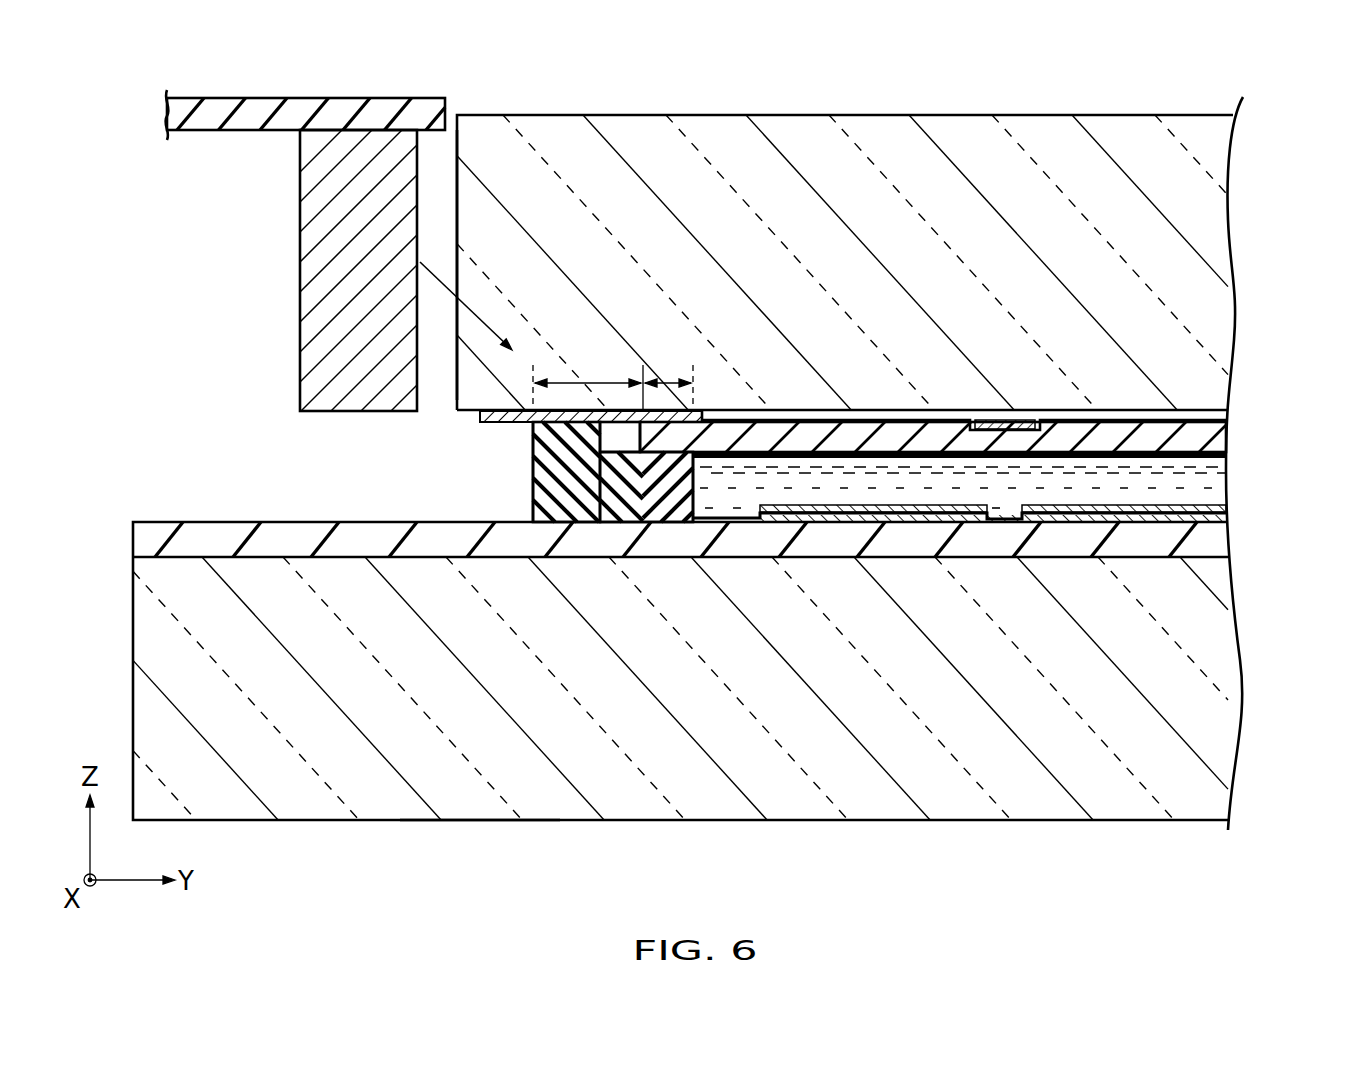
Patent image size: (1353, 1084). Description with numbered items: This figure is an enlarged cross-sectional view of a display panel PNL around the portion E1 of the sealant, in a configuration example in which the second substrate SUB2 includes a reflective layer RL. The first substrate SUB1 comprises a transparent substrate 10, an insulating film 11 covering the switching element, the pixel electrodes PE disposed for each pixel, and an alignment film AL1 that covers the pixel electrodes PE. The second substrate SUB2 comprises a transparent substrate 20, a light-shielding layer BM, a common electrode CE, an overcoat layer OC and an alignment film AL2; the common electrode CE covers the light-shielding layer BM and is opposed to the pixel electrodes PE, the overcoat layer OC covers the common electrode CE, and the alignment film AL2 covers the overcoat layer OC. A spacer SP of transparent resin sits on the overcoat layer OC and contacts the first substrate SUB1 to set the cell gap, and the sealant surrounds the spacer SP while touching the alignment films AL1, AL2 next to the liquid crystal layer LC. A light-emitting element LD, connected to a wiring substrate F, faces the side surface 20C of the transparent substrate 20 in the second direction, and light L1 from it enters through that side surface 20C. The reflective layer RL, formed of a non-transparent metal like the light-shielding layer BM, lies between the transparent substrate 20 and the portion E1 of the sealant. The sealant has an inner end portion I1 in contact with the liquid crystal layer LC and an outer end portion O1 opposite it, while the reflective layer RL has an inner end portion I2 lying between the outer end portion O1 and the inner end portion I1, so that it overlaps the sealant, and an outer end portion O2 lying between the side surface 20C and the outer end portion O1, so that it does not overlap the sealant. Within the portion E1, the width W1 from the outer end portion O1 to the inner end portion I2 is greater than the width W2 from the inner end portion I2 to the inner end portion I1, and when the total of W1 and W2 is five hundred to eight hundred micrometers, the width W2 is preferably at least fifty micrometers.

The wiring substrate F is at (256, 106).
The side surface 20C is at (450, 200).
The transparent substrate 20 is at (1101, 132).
The second substrate SUB2 is at (1240, 270).
The light-emitting element LD is at (300, 277).
The light L1 is at (468, 308).
The width W1 is at (588, 379).
The width W2 is at (669, 379).
The outer end portion O2 is at (470, 421).
The reflective layer RL is at (508, 422).
The outer end portion O1 is at (522, 485).
The portion of the sealant E1 is at (575, 522).
The spacer SP is at (618, 522).
The inner end portion I2 is at (656, 432).
The inner end portion I1 is at (704, 497).
The light-shielding layer BM is at (1015, 418).
The common electrode CE is at (1228, 413).
The overcoat layer OC is at (1226, 443).
The alignment film AL2 is at (1226, 460).
The liquid crystal layer LC is at (1226, 488).
The pixel electrode PE is at (826, 522).
The alignment film AL1 is at (1226, 520).
The insulating film 11 is at (920, 540).
The first substrate SUB1 is at (1240, 662).
The transparent substrate 10 is at (742, 800).
The display panel PNL is at (478, 823).